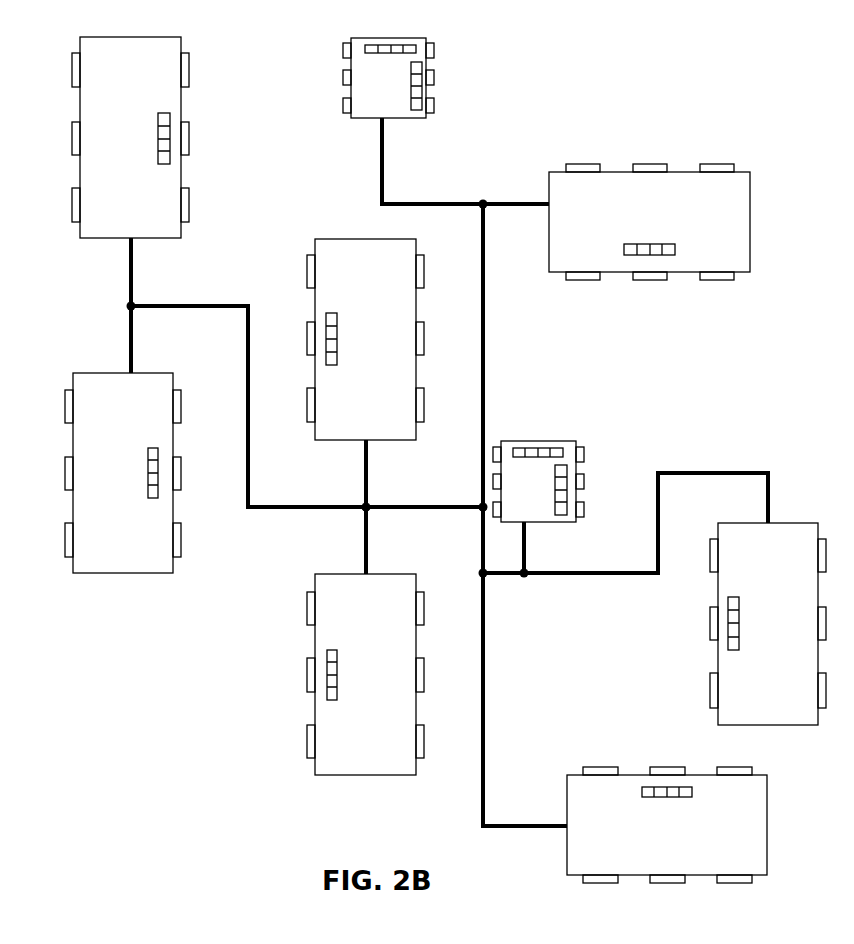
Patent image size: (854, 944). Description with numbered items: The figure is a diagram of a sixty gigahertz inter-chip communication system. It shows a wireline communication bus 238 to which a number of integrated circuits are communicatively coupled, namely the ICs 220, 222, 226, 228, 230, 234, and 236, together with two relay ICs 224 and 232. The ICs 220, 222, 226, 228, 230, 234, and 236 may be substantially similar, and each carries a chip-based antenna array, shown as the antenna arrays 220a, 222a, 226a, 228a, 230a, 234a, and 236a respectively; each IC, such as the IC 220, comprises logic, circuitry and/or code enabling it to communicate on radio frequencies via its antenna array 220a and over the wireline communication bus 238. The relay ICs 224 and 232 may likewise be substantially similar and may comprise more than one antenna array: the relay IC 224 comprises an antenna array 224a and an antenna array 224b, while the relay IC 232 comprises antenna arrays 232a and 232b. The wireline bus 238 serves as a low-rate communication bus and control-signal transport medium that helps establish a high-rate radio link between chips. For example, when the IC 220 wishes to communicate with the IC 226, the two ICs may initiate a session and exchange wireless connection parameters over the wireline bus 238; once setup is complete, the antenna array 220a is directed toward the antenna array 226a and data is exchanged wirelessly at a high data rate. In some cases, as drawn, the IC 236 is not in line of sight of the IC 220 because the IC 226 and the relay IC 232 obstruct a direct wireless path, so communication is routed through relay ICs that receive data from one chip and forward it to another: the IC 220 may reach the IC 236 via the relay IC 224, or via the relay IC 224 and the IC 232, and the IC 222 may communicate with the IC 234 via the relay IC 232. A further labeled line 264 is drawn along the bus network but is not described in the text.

The IC 220 is at (163, 239).
The antenna array 220a is at (158, 146).
The IC 222 is at (97, 574).
The antenna array 222a is at (148, 450).
The relay IC 224 is at (398, 38).
The antenna array 224a is at (408, 54).
The antenna array 224b is at (411, 102).
The IC 226 is at (381, 441).
The antenna array 226a is at (337, 330).
The IC 228 is at (349, 776).
The antenna array 228a is at (337, 698).
The IC 230 is at (716, 164).
The antenna array 230a is at (640, 244).
The relay IC 232 is at (523, 441).
The antenna array 232a is at (552, 458).
The antenna array 232b is at (555, 503).
The IC 234 is at (757, 775).
The antenna array 234a is at (660, 797).
The IC 236 is at (785, 523).
The antenna array 236a is at (739, 642).
The wireline communication bus 238 is at (381, 165).
The bus 264 is at (485, 355).